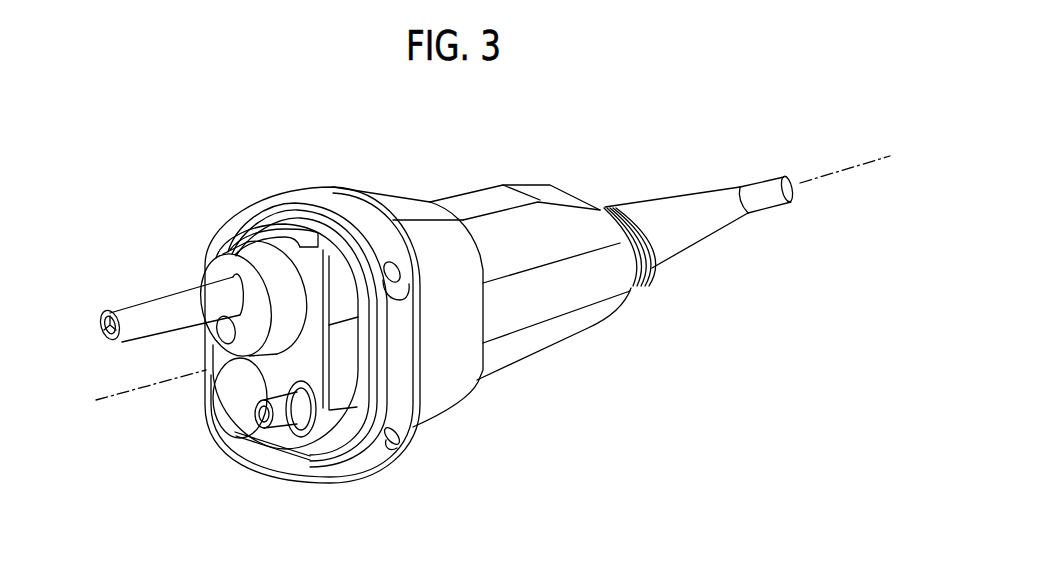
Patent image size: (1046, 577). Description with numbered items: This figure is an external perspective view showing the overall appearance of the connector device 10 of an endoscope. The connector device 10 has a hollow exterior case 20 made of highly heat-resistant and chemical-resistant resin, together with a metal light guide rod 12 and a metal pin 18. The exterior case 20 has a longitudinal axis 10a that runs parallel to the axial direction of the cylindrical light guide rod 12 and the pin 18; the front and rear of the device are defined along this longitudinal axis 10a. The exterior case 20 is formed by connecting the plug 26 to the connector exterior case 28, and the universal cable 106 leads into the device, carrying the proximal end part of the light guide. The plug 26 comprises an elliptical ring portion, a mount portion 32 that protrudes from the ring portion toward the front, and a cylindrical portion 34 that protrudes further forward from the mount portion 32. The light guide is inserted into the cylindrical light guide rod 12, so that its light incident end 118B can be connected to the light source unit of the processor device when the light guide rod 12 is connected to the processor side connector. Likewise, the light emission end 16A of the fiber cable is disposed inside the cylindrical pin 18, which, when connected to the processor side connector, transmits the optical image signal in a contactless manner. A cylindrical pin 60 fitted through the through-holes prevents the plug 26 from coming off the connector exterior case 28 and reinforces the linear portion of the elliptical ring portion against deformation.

The connector device 10 is at (438, 136).
The longitudinal axis 10a is at (471, 289).
The light guide rod 12 is at (138, 307).
The light emission end 16A is at (266, 424).
The pin 18 is at (310, 425).
The exterior case 20 is at (384, 186).
The plug 26 is at (286, 225).
The connector exterior case 28 is at (469, 186).
The mount portion 32 is at (333, 272).
The cylindrical portion 34 is at (212, 268).
The pin 60 is at (403, 268).
The universal cable 106 is at (768, 182).
The light incident end 118B is at (107, 332).